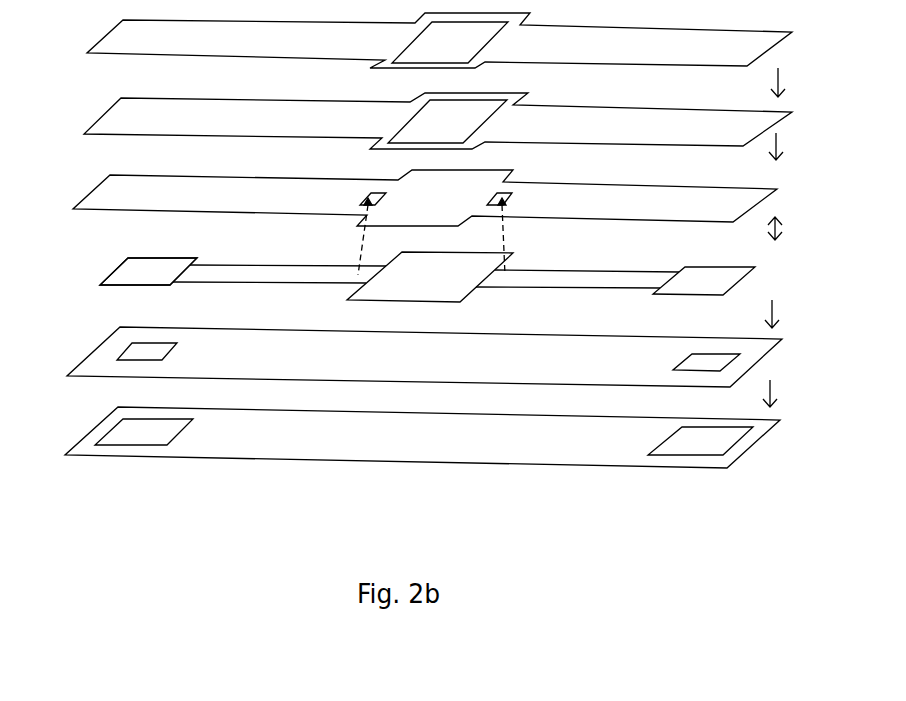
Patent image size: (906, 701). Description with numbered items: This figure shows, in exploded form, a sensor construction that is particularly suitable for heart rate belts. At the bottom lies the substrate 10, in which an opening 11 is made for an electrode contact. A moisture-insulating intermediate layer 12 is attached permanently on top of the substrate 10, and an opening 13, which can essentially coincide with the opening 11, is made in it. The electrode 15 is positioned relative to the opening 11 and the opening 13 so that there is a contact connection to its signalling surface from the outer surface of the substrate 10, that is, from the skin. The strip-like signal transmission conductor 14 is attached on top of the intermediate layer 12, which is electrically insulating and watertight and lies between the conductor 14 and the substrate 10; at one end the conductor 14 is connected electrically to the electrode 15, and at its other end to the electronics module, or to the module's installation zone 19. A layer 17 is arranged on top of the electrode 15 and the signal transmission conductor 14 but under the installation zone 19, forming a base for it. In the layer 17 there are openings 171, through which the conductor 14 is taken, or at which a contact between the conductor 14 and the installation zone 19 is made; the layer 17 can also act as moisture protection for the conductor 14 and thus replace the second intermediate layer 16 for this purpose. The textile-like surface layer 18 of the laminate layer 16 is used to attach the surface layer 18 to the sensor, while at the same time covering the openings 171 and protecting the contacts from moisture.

The substrate 10 is at (365, 455).
The opening 11 is at (120, 437).
The intermediate layer 12 is at (365, 375).
The opening 13 is at (135, 353).
The signal transmission conductor 14 is at (288, 270).
The electrode 15 is at (130, 278).
The second intermediate layer 16 is at (296, 130).
The layer 17 is at (261, 207).
The openings 171 is at (497, 195).
The surface layer 18 is at (298, 50).
The installation zone 19 is at (428, 265).